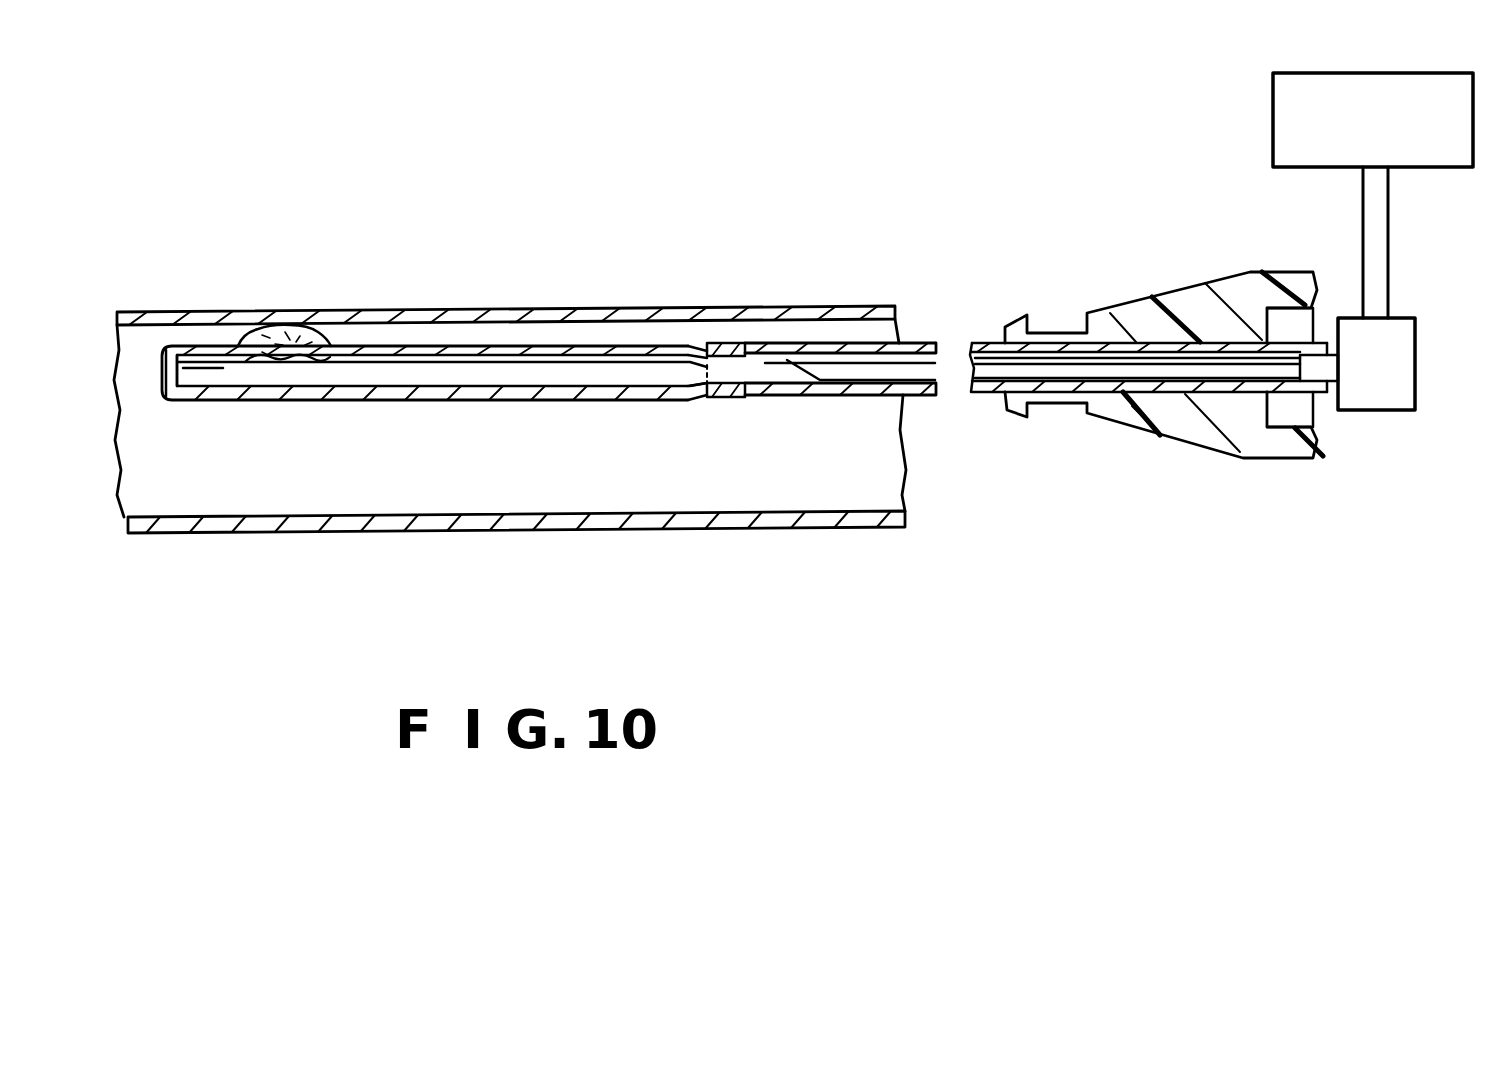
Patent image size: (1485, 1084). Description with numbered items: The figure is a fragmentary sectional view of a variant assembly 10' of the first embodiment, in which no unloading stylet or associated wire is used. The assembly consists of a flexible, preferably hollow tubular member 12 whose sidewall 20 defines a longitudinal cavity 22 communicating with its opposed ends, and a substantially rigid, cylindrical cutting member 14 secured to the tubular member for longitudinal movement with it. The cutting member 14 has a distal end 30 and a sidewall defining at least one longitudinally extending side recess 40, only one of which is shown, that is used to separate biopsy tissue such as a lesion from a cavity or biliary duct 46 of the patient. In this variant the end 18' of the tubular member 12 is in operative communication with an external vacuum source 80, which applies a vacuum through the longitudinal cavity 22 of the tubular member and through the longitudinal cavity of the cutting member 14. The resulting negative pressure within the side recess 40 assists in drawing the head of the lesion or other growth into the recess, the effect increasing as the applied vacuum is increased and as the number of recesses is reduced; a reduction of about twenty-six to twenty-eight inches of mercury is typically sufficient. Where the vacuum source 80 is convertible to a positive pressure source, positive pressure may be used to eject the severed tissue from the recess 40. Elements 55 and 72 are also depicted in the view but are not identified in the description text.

The variant assembly 10' is at (510, 361).
The tubular member 12 is at (935, 396).
The cutting member 14 is at (348, 403).
The distal end 18' is at (1339, 428).
The sidewall 20 is at (784, 373).
The longitudinal cavity 22 is at (780, 373).
The distal end 30 is at (158, 380).
The side recess 40 is at (247, 357).
The biliary duct 46 is at (380, 308).
The fitting 55 is at (1177, 288).
The stylet rod 72 is at (562, 373).
The vacuum source 80 is at (1273, 100).